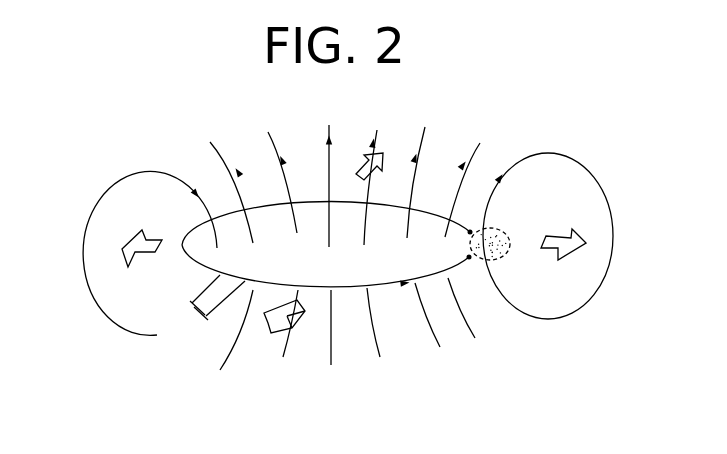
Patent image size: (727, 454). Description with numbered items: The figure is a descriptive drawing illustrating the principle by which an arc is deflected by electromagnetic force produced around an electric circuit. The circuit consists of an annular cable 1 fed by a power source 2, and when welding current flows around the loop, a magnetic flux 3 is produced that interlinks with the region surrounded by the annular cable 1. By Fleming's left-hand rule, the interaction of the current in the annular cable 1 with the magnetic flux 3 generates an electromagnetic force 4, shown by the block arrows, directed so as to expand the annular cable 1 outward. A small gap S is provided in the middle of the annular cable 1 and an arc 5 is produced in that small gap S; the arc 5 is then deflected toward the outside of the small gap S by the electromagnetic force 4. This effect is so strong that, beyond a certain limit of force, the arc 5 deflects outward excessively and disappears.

The annular cable 1 is at (429, 210).
The power source 2 is at (200, 319).
The magnetic flux 3 is at (410, 170).
The electromagnetic force 4 is at (122, 252).
The arc 5 is at (509, 232).
The small gap S is at (470, 230).